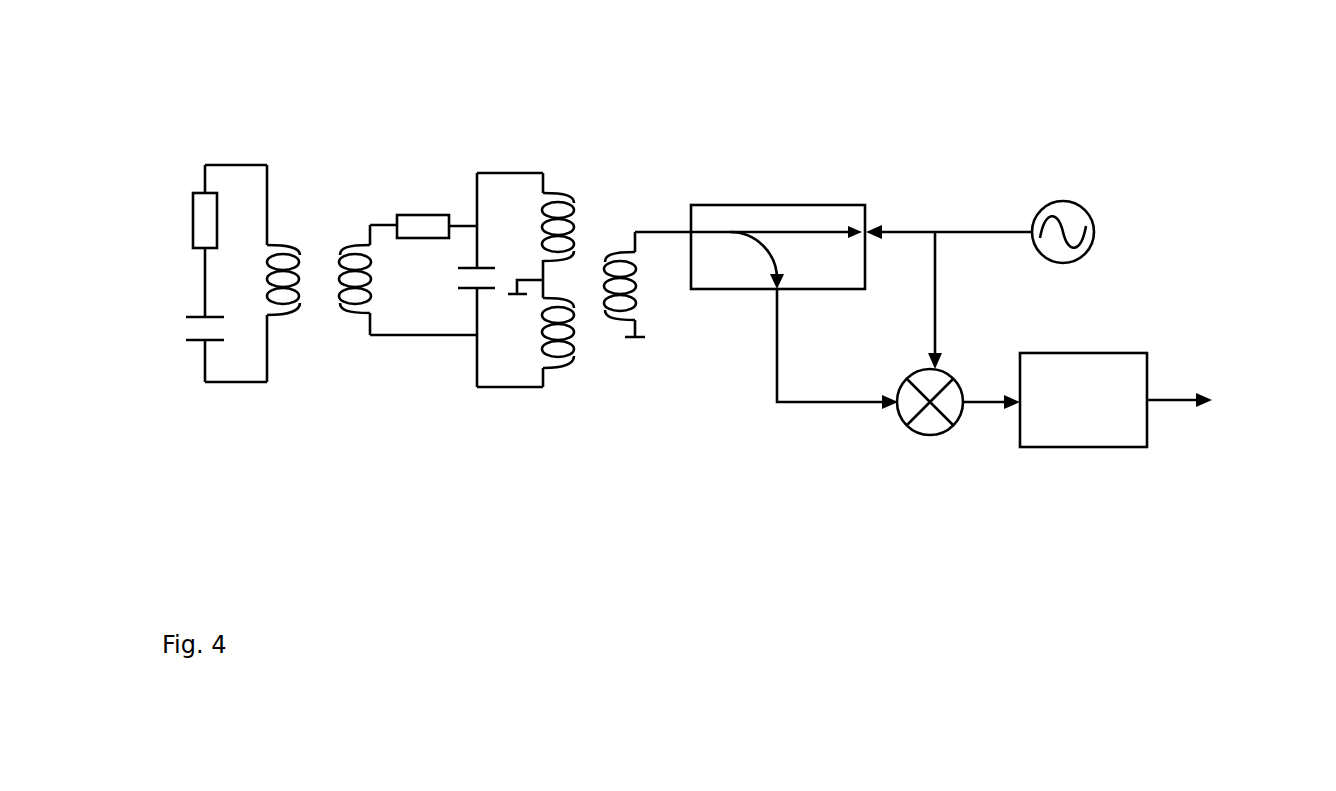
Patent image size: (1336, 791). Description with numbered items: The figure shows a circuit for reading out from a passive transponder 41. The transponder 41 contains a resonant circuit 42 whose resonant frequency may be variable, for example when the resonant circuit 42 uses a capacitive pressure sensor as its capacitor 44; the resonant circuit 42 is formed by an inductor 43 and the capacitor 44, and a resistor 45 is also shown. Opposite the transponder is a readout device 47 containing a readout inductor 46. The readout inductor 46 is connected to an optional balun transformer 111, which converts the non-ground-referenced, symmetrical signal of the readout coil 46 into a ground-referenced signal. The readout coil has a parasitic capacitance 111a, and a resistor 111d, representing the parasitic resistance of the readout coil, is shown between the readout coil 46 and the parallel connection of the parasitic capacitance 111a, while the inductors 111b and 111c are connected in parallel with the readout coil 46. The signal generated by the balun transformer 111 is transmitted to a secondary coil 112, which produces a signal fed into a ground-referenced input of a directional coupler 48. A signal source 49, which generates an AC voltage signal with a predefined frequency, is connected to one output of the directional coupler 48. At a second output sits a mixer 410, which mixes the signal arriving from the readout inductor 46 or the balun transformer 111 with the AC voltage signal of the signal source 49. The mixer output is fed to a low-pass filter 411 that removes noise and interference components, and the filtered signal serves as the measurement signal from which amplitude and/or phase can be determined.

The passive transponder 41 is at (200, 241).
The resonant circuit 42 is at (237, 165).
The inductor 43 is at (280, 316).
The capacitor 44 is at (193, 342).
The resistor 45 is at (193, 236).
The readout inductor 46 is at (352, 313).
The readout device 47 is at (1005, 338).
The directional coupler 48 is at (745, 206).
The signal source 49 is at (1068, 201).
The mixer 410 is at (906, 420).
The low-pass filter 411 is at (1077, 447).
The balun transformer 111 is at (478, 326).
The parasitic capacitance 111a is at (470, 292).
The inductor 111b is at (560, 193).
The inductor 111c is at (562, 372).
The resistor 111d is at (400, 215).
The secondary coil 112 is at (615, 248).